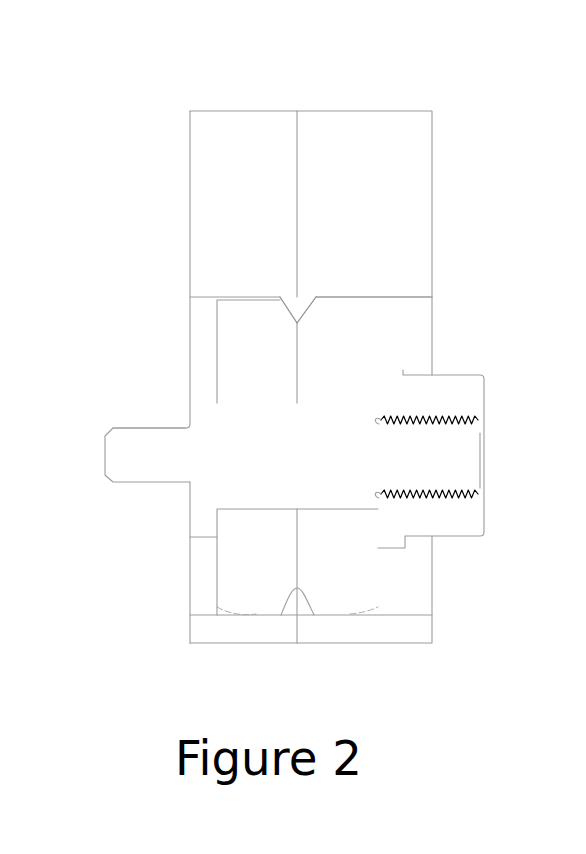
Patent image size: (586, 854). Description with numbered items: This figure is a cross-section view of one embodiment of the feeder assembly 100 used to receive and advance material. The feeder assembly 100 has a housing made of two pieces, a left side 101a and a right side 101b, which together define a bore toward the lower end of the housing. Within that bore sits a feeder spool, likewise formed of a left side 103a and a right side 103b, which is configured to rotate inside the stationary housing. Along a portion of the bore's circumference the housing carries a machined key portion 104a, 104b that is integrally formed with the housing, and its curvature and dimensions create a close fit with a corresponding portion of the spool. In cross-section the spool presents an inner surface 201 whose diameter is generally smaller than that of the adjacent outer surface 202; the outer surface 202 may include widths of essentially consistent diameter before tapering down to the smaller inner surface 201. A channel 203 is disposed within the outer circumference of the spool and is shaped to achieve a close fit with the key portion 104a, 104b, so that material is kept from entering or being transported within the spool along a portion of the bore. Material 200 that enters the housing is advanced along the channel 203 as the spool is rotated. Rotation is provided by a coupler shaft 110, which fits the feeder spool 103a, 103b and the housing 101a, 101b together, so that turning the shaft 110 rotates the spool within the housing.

The feeder assembly 100 is at (465, 57).
The left side of housing 101a is at (214, 140).
The right side of housing 101b is at (413, 128).
The machined key portion 104a is at (296, 321).
The machined key portion 104b is at (300, 320).
The outer surface of feeder spool 202 is at (337, 297).
The inner surface of feeder spool 201 is at (307, 315).
The left side of feeder spool 103a is at (252, 327).
The right side of feeder spool 103b is at (330, 348).
The coupler shaft 110 is at (122, 445).
The material 200 is at (287, 522).
The channel 203 is at (303, 607).